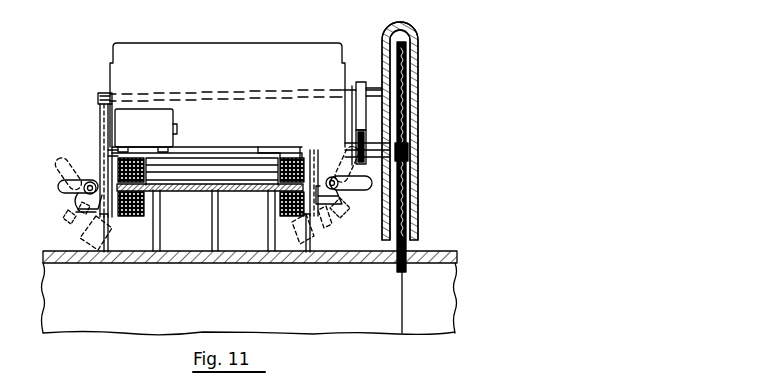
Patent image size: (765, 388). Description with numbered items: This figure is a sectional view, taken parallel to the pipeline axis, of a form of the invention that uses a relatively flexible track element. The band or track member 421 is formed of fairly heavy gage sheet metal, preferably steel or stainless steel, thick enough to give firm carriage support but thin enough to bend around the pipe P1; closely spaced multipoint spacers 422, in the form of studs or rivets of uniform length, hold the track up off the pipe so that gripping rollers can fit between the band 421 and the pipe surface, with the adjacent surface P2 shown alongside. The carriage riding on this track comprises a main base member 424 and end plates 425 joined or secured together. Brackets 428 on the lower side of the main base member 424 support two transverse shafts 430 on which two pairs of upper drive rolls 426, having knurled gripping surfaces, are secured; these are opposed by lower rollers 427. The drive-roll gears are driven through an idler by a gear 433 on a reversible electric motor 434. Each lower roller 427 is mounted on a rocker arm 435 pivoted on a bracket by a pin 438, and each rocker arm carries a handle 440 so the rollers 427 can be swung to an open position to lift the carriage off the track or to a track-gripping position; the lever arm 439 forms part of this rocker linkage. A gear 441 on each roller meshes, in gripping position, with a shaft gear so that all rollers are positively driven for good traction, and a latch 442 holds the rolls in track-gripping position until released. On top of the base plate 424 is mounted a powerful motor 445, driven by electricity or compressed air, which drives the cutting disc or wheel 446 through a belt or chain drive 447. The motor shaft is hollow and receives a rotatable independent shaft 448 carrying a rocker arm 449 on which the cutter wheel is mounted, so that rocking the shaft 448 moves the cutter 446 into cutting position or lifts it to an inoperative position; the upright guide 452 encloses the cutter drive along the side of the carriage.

The pipe P1 is at (56, 250).
The second plate P2 is at (432, 252).
The band or track member 421 is at (176, 220).
The multipoint spacers 422 is at (262, 220).
The main base member 424 is at (248, 148).
The end plates 425 is at (108, 151).
The upper drive rolls 426 is at (142, 150).
The lower rollers 427 is at (160, 237).
The brackets 428 is at (262, 155).
The transverse shafts 430 is at (206, 160).
The gear 433 is at (100, 126).
The reversible electric motor 434 is at (102, 103).
The rocker arm 435 is at (334, 229).
The pin 438 is at (339, 212).
The lever arm 439 is at (68, 187).
The handle 440 is at (66, 182).
The gear 441 is at (106, 238).
The latch 442 is at (88, 208).
The motor 445 is at (215, 43).
The cutting disc or wheel 446 is at (407, 82).
The belt or chain drive 447 is at (352, 94).
The rotatable independent shaft 448 is at (146, 94).
The rocker arm 449 is at (352, 102).
The tube 452 is at (415, 30).